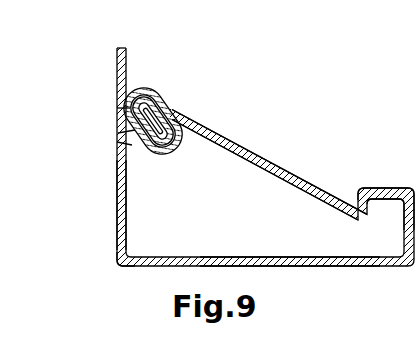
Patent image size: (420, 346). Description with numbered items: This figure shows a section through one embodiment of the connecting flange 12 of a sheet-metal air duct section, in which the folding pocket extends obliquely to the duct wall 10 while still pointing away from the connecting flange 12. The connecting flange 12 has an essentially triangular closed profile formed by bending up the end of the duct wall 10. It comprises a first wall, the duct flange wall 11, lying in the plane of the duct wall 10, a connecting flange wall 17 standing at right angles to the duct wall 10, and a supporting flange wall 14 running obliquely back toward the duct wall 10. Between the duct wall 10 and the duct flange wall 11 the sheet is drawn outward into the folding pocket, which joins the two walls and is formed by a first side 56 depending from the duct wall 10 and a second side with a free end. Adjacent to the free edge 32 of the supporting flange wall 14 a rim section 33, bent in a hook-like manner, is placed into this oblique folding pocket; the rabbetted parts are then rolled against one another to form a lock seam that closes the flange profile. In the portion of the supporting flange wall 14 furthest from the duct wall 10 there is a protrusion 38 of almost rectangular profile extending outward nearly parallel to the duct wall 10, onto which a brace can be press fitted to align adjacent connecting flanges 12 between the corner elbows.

The duct wall 10 is at (118, 57).
The duct flange wall 11 is at (117, 184).
The connecting flange 12 is at (115, 257).
The supporting flange wall 14 is at (244, 152).
The connecting flange wall 17 is at (291, 268).
The free edge 32 is at (116, 142).
The rim section 33 is at (118, 109).
The protrusion 38 is at (380, 187).
The first side 56 is at (118, 133).